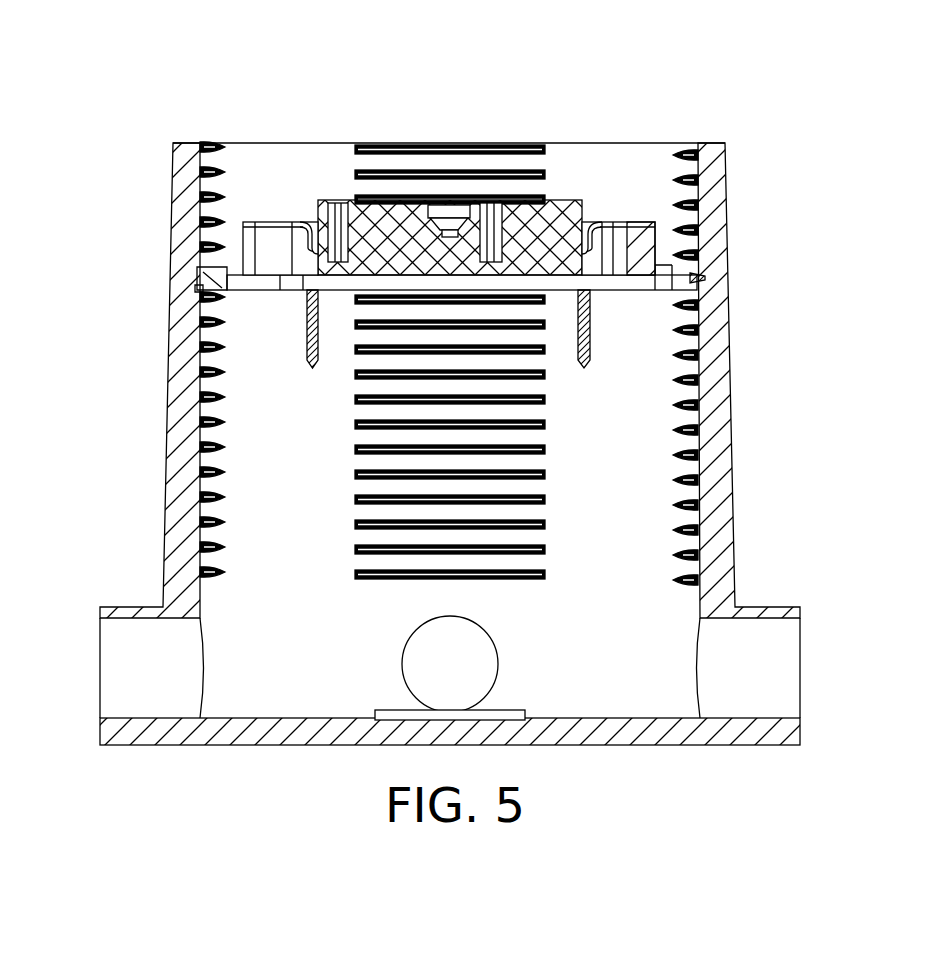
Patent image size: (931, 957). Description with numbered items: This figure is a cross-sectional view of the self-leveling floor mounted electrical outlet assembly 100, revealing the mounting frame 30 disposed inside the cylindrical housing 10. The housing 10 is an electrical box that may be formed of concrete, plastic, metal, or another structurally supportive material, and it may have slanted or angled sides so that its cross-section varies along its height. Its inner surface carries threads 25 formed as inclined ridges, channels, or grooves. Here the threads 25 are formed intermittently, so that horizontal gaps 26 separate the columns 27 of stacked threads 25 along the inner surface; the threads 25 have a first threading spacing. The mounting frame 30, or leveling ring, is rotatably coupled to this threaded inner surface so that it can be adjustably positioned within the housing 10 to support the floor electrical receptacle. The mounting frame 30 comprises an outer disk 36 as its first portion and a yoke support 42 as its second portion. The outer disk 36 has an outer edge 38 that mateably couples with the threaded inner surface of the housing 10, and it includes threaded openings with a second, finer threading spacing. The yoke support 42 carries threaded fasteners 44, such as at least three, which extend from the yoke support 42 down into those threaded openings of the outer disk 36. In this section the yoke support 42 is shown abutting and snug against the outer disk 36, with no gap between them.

The self-leveling floor mounted electrical outlet assembly 100 is at (118, 112).
The cylindrical housing 10 is at (720, 378).
The threads 25 is at (725, 224).
The gaps 26 is at (350, 580).
The columns 27 is at (355, 580).
The mounting frame 30 is at (443, 198).
The outer disk 36 is at (455, 284).
The outer edge 38 is at (700, 277).
The yoke support 42 is at (250, 247).
The threaded fasteners 44 is at (307, 343).